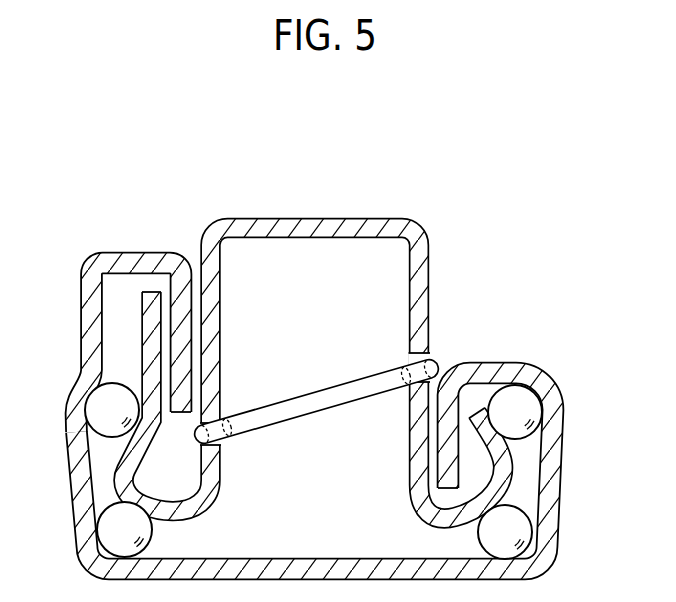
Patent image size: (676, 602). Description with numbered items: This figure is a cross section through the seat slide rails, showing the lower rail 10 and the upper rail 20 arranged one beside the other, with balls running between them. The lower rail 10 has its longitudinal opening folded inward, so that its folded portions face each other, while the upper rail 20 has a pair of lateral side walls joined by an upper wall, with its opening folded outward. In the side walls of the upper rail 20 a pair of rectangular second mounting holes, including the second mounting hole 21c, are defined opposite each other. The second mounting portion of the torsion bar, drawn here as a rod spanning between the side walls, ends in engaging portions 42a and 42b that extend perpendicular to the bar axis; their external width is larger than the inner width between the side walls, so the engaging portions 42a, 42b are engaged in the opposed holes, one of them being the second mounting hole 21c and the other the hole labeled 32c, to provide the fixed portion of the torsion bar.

The lower rail 10 is at (131, 246).
The upper rail 20 is at (309, 211).
The second mounting hole 21c is at (220, 446).
The notch 32c is at (424, 354).
The engaging portion 42a is at (196, 434).
The engaging portion 42b is at (436, 363).